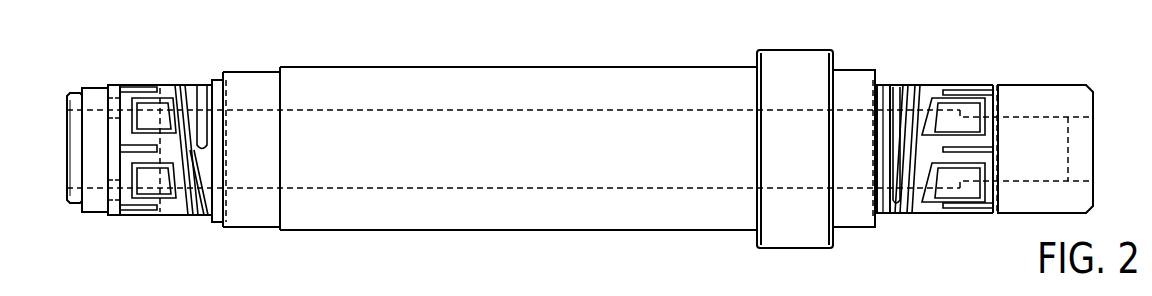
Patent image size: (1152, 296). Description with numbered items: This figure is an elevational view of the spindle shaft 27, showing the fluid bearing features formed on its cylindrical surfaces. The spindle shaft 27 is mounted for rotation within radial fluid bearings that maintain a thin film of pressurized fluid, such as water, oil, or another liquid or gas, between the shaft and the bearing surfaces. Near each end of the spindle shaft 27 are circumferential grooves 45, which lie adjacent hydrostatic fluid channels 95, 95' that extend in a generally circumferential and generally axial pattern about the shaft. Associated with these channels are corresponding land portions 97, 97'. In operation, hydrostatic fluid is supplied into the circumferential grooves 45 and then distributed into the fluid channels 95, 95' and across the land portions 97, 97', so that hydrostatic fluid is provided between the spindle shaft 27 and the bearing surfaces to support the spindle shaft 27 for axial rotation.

The spindle shaft 27 is at (548, 83).
The circumferential grooves 45 is at (115, 82).
The hydrostatic fluid channel 95 is at (181, 147).
The land portion 97 is at (145, 157).
The hydrostatic fluid channel 95' is at (928, 148).
The land portion 97' is at (955, 178).